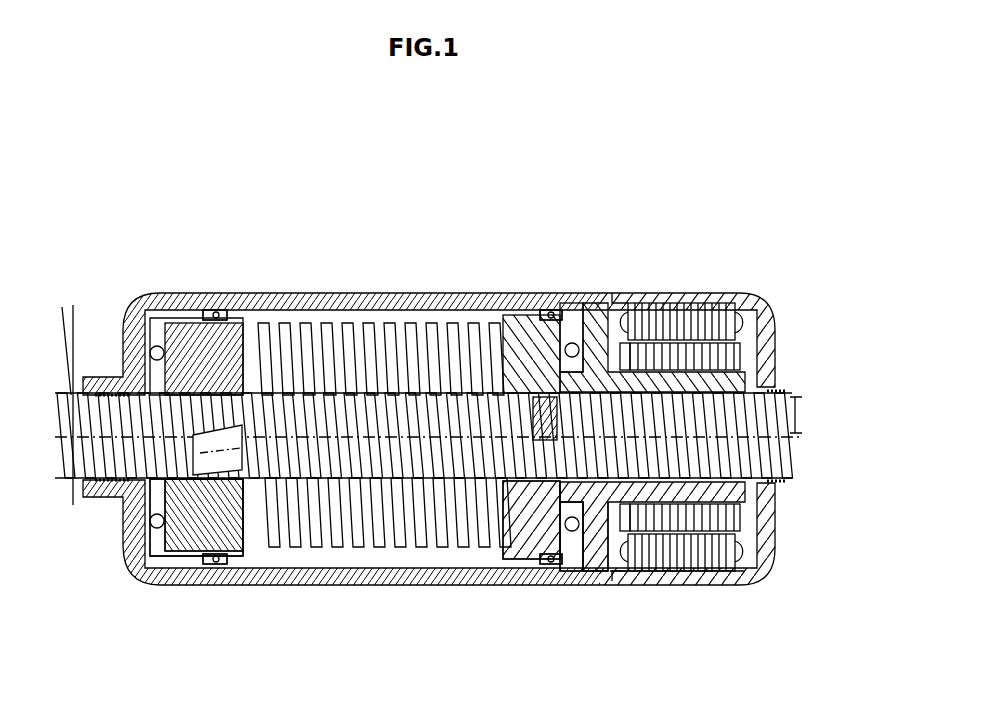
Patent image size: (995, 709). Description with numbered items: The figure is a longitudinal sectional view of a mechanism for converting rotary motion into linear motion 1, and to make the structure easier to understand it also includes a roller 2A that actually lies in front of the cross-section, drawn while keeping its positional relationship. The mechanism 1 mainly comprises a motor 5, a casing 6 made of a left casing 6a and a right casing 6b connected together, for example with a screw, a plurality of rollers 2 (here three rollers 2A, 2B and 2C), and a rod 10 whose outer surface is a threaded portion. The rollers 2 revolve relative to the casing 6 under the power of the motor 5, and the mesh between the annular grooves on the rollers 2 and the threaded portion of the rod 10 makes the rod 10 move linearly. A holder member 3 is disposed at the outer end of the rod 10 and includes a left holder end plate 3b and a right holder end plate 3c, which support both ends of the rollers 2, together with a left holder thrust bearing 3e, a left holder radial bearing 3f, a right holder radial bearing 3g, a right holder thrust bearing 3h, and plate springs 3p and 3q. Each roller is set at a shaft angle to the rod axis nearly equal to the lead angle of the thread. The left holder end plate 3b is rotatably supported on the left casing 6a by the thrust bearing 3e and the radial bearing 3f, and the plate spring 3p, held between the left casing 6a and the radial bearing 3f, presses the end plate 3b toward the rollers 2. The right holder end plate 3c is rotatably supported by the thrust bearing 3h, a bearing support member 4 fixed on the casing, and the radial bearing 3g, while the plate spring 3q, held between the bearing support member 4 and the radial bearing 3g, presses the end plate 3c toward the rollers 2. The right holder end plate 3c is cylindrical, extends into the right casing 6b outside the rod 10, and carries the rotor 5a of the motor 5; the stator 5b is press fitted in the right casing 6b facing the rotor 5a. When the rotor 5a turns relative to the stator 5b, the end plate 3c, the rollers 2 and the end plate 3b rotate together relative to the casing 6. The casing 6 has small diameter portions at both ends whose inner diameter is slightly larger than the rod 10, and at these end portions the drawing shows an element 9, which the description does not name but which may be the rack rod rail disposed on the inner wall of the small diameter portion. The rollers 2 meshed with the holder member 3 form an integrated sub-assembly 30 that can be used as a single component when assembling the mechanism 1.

The mechanism for converting rotary motion into linear motion 1 is at (707, 612).
The rollers 2 is at (378, 512).
The roller 2A is at (325, 492).
The roller 2B is at (304, 370).
The roller 2C is at (545, 418).
The holder member 3 is at (245, 556).
The left holder end plate 3b is at (188, 552).
The right holder end plate 3c is at (530, 550).
The left holder thrust bearing 3e is at (155, 537).
The left holder radial bearing 3f is at (222, 566).
The right holder radial bearing 3g is at (563, 566).
The right holder thrust bearing 3h is at (579, 550).
The plate spring 3p is at (204, 318).
The plate spring 3q is at (560, 314).
The bearing support member 4 is at (590, 325).
The motor 5 is at (705, 252).
The rotor 5a is at (678, 336).
The stator 5b is at (725, 328).
The casing 6 is at (643, 633).
The left casing 6a is at (588, 582).
The right casing 6b is at (643, 580).
The seal 9 is at (125, 394).
The rod 10 is at (77, 495).
The sub-assembly 30 is at (368, 620).